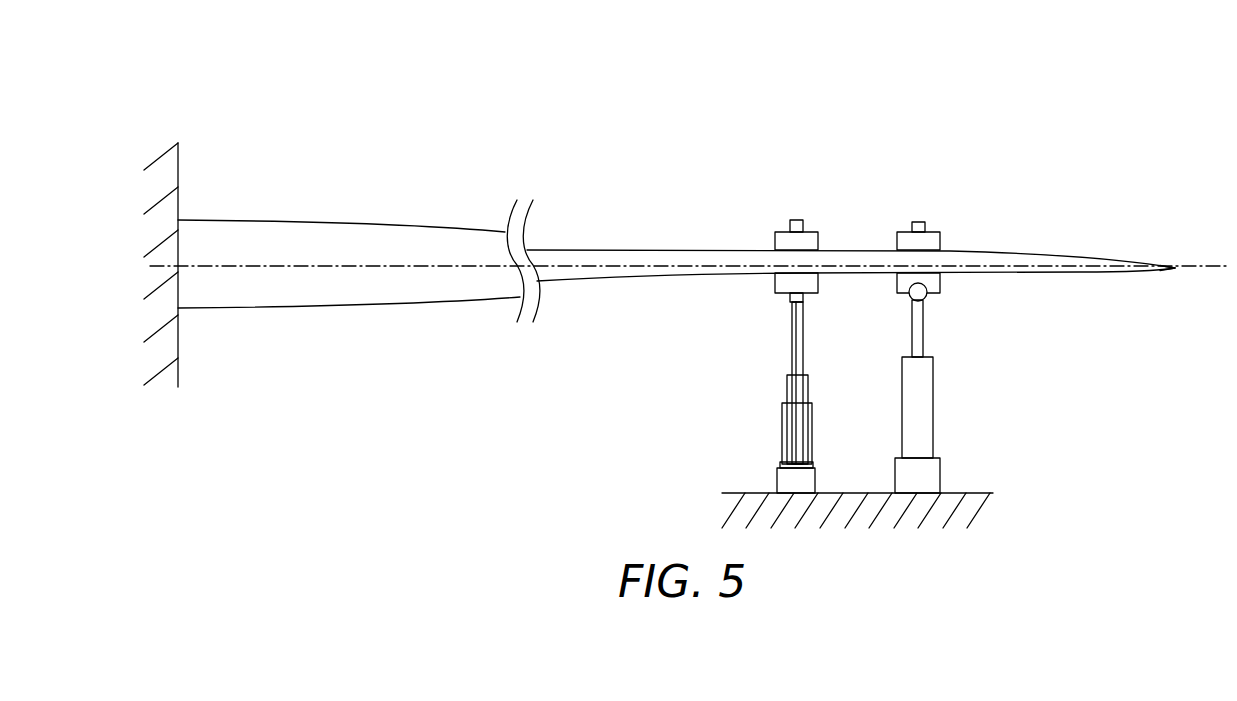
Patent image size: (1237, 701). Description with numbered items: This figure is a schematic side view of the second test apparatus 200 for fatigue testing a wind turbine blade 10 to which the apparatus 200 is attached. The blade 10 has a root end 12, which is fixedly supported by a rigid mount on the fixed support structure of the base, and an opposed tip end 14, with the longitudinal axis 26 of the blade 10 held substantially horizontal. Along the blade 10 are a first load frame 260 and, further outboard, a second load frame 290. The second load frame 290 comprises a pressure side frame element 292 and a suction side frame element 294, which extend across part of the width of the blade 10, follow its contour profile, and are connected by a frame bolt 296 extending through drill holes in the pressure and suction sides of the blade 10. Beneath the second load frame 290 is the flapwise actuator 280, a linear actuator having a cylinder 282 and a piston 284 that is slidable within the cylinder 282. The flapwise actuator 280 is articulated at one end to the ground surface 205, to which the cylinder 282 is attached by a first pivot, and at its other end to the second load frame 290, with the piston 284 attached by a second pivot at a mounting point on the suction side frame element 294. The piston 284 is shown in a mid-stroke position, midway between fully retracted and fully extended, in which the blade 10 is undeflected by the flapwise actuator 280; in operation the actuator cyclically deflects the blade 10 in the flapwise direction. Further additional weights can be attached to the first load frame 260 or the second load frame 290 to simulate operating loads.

The second test apparatus 200 is at (282, 90).
The wind turbine blade 10 is at (1104, 232).
The root end 12 is at (211, 310).
The tip end 14 is at (1176, 270).
The longitudinal axis 26 is at (625, 262).
The ground surface 205 is at (975, 493).
The first load frame 260 is at (776, 216).
The second load frame 290 is at (898, 225).
The pressure side frame element 292 is at (941, 246).
The suction side frame element 294 is at (897, 285).
The frame bolt 296 is at (921, 222).
The flapwise actuator 280 is at (950, 382).
The cylinder 282 is at (902, 420).
The piston 284 is at (912, 330).